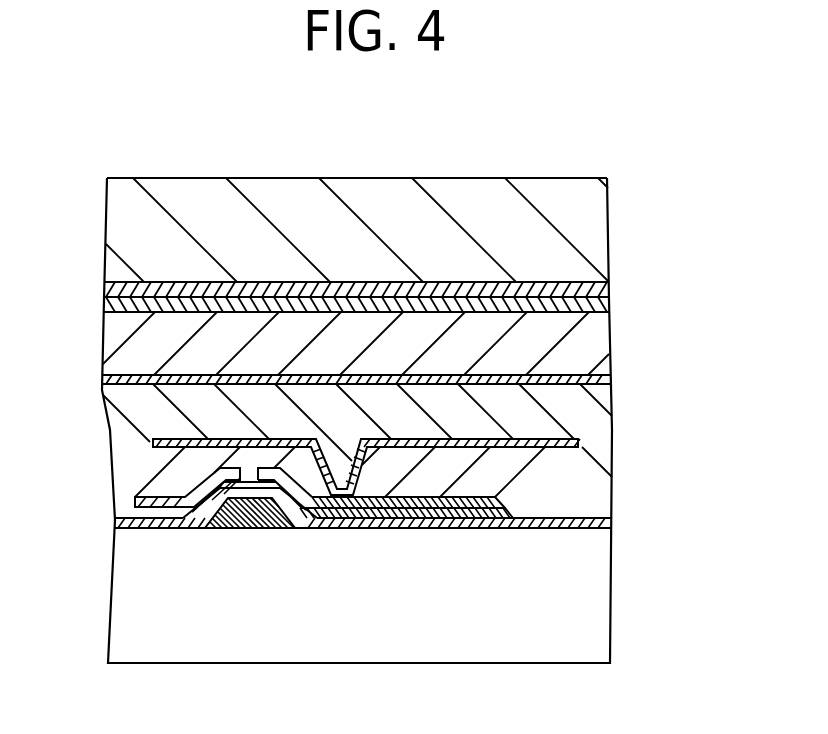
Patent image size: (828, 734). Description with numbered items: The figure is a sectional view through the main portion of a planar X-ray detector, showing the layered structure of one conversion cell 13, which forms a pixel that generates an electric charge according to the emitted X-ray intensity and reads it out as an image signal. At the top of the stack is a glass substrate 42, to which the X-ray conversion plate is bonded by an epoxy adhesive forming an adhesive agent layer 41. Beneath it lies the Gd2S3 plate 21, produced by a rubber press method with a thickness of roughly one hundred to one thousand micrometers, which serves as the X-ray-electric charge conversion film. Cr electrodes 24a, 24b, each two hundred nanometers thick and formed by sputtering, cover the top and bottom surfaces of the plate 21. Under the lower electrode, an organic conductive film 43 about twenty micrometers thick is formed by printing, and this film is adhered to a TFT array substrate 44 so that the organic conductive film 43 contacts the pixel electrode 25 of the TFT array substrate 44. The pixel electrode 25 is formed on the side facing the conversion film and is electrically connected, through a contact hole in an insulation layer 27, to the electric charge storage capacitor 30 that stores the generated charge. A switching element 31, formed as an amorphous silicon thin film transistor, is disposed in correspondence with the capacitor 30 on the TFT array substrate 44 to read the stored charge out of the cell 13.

The conversion cell 13 is at (394, 168).
The glass substrate 42 is at (598, 222).
The adhesive agent layer 41 is at (598, 284).
The Cr electrode 24a is at (598, 306).
The Gd2S3 plate 21 is at (598, 346).
The Cr electrode 24b is at (598, 381).
The organic conductive film 43 is at (598, 419).
The pixel electrode 25 is at (150, 441).
The insulation layer 27 is at (150, 486).
The switching element 31 is at (246, 530).
The electric charge storage capacitor 30 is at (432, 530).
The TFT array substrate 44 is at (662, 435).